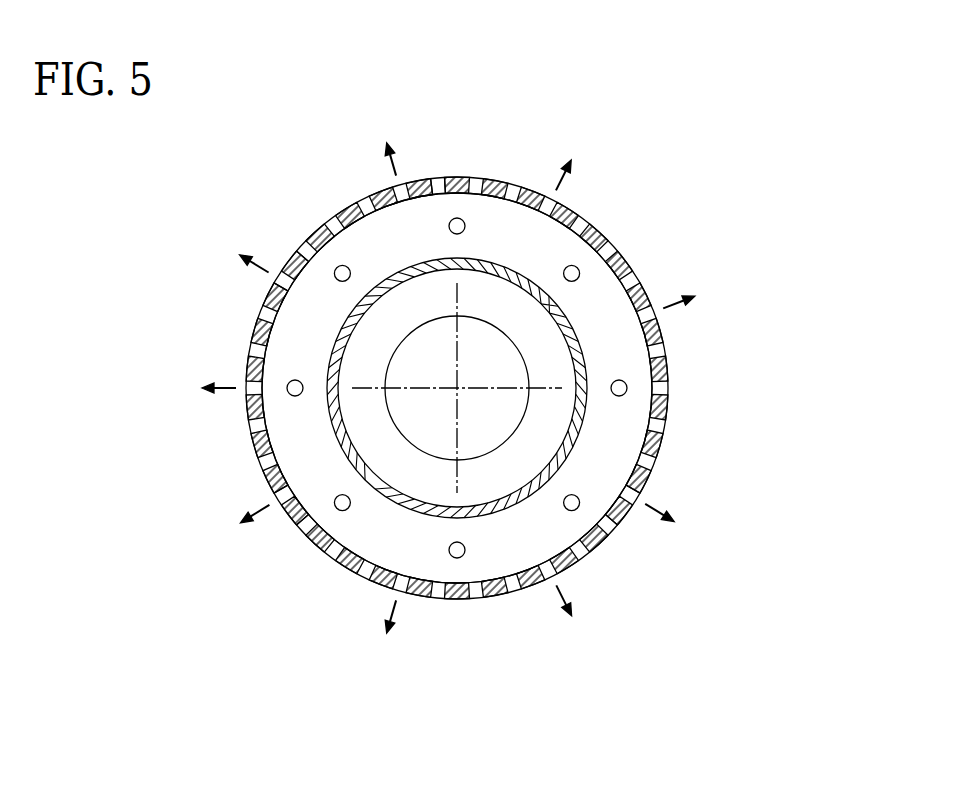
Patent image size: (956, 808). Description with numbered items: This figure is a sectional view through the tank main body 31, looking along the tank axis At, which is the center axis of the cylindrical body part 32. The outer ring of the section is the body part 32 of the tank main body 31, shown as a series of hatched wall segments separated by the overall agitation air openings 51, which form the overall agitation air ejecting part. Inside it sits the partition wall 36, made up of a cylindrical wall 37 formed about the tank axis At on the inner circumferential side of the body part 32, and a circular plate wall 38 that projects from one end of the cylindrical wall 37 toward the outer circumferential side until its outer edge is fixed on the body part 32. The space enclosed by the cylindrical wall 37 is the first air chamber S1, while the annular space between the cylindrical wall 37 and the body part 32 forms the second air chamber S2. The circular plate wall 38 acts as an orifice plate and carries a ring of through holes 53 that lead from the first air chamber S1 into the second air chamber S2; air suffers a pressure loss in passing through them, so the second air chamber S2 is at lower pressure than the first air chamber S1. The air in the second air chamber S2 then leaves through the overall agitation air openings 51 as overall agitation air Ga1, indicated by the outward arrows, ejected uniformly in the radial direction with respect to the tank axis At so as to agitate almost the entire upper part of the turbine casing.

The tank main body 31 is at (449, 377).
The body part 32 is at (315, 235).
The partition wall 36 is at (347, 638).
The cylindrical wall 37 is at (397, 500).
The circular plate wall 38 is at (338, 522).
The overall agitation air openings 51 is at (277, 278).
The through holes 53 is at (458, 218).
The tank axis At is at (457, 388).
The first air chamber S1 is at (547, 417).
The second air chamber S2 is at (627, 343).
The overall agitation air Ga1 is at (393, 172).